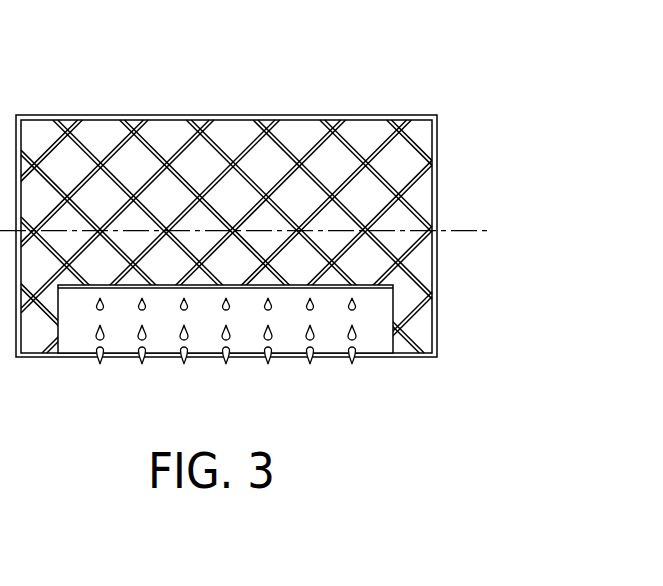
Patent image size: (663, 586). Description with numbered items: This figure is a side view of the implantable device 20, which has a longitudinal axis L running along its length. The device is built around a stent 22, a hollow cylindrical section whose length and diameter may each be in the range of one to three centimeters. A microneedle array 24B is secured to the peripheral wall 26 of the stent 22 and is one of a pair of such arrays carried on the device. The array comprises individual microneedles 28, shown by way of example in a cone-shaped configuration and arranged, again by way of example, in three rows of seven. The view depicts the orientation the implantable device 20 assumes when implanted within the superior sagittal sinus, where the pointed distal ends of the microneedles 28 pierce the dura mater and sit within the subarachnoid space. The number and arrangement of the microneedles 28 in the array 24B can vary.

The implantable device 20 is at (361, 77).
The stent 22 is at (437, 145).
The microneedle array 24B is at (374, 336).
The peripheral wall 26 is at (178, 143).
The microneedles 28 is at (226, 364).
The longitudinal axis L is at (463, 231).